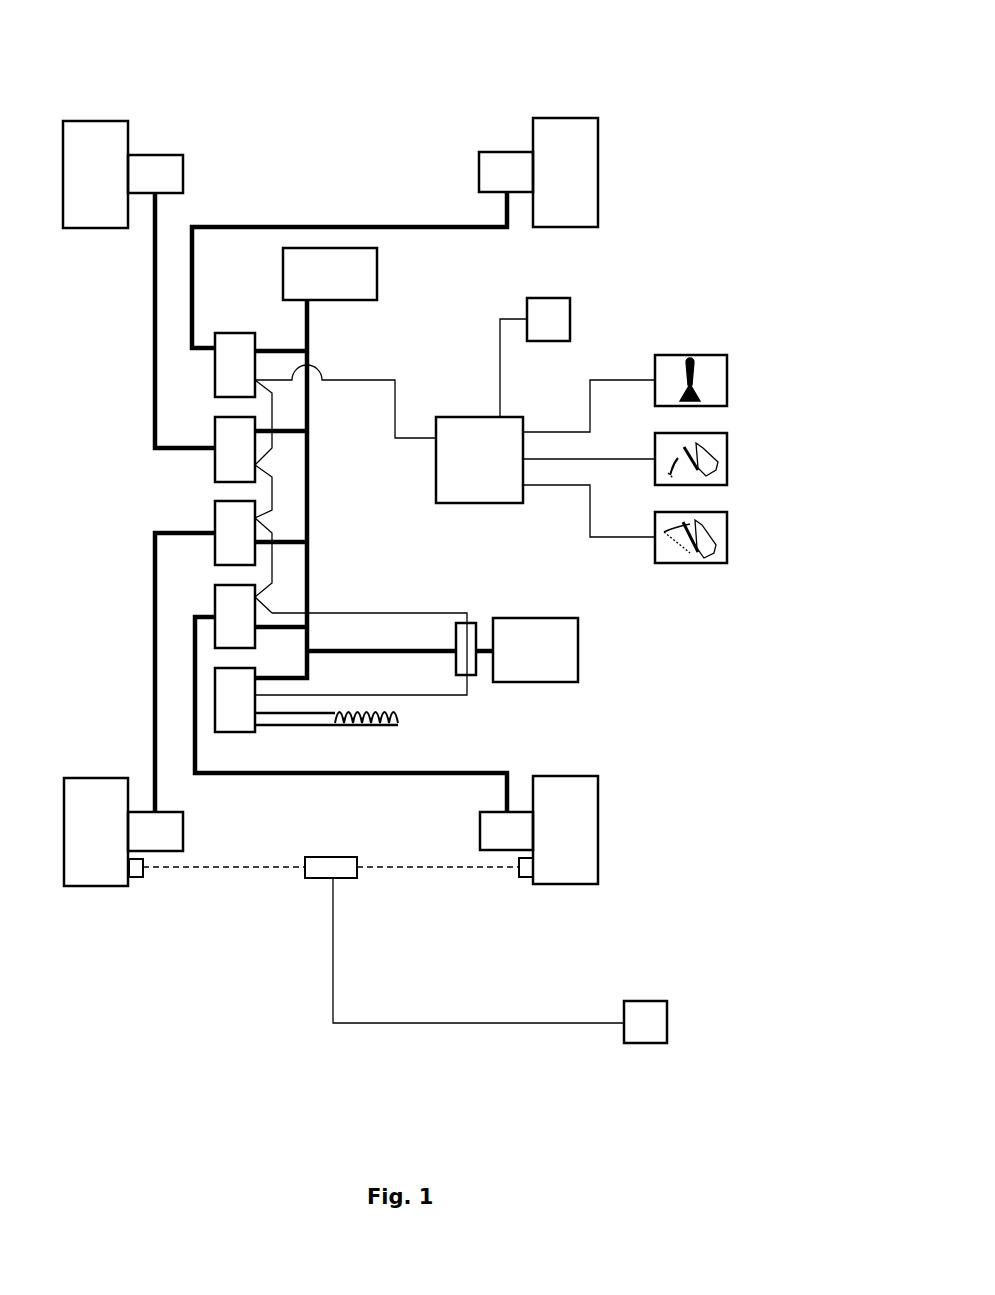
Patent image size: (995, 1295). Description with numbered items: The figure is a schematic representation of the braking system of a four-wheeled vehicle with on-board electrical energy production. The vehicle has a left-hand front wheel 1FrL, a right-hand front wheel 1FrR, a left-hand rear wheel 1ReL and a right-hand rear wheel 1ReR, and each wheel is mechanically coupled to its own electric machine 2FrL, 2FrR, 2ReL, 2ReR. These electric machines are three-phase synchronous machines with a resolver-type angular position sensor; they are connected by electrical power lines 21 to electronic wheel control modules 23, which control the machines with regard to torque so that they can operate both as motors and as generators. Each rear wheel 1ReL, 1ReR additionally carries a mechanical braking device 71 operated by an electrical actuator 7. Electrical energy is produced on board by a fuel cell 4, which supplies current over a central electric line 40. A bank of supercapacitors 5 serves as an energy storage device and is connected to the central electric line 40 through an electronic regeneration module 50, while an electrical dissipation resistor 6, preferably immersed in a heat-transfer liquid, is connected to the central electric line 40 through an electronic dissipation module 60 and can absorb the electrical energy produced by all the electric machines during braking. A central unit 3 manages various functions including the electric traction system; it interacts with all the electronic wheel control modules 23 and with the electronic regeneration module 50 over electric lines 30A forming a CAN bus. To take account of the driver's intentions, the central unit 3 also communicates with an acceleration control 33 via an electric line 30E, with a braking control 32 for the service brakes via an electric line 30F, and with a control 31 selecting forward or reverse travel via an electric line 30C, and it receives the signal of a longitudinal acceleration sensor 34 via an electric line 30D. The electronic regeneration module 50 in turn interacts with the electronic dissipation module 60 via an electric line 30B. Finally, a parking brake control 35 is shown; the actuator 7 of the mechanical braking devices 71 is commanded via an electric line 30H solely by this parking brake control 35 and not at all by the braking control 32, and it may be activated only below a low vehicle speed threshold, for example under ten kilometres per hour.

The left-hand front wheel 1FrL is at (85, 120).
The electric machine 2FrL is at (156, 153).
The right-hand front wheel 1FrR is at (578, 117).
The electric machine 2FrR is at (503, 151).
The left-hand rear wheel 1ReL is at (80, 887).
The electric machine 2ReL is at (163, 853).
The right-hand rear wheel 1ReR is at (578, 886).
The electric machine 2ReR is at (492, 852).
The mechanical braking device 71 is at (137, 880).
The electrical actuator 7 is at (325, 855).
The electric line 30H is at (430, 1025).
The parking brake control 35 is at (648, 1044).
The electrical power lines 21 is at (190, 288).
The fuel cell 4 is at (375, 286).
The central electric line 40 is at (309, 573).
The electronic wheel control modules 23 is at (228, 598).
The electric lines 30A is at (335, 378).
The central unit 3 is at (455, 425).
The longitudinal acceleration sensor 34 is at (563, 308).
The electric line 30D is at (503, 378).
The control selecting forward or reverse travel 31 is at (722, 378).
The electric line 30C is at (621, 383).
The braking control 32 is at (722, 456).
The electric line 30F is at (621, 461).
The acceleration control 33 is at (722, 535).
The electric line 30E is at (621, 540).
The electronic regeneration module 50 is at (470, 621).
The bank of supercapacitors 5 is at (567, 656).
The electronic dissipation module 60 is at (240, 733).
The electrical dissipation resistor 6 is at (398, 727).
The electric line 30B is at (436, 695).